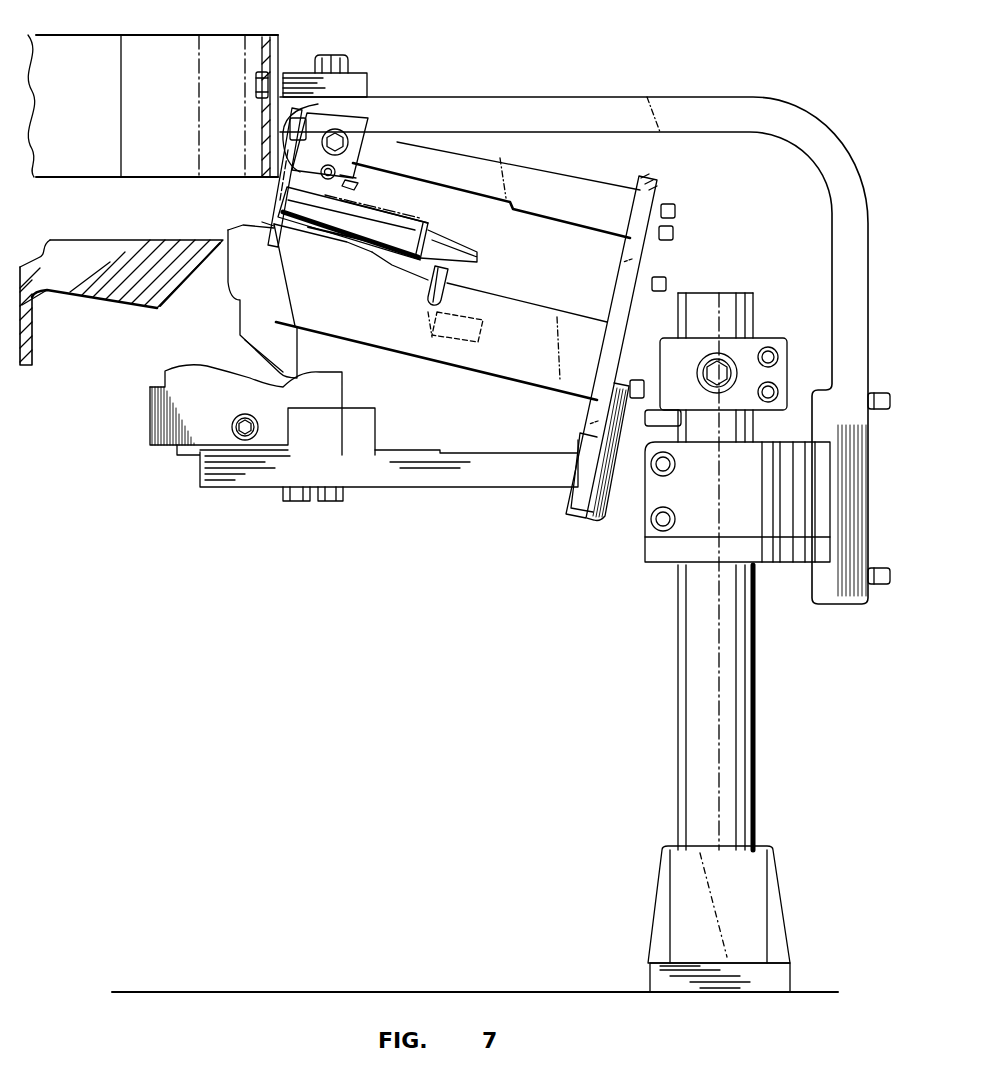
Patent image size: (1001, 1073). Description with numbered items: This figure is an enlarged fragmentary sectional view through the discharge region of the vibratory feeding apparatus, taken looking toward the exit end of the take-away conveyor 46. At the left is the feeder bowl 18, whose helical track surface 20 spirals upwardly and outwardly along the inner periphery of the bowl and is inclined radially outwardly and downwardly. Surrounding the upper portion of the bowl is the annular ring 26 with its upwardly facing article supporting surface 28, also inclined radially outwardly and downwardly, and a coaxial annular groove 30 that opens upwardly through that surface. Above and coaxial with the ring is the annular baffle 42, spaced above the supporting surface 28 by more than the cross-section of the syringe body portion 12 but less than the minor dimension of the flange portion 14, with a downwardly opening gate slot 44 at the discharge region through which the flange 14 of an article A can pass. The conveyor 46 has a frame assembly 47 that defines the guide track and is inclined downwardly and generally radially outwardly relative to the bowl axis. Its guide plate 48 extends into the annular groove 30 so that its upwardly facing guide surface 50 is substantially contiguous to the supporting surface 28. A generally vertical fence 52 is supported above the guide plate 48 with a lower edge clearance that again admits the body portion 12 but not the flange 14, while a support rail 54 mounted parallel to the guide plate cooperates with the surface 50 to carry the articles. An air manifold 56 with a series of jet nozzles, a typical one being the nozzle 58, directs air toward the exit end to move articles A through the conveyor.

The body portion 12 is at (417, 232).
The flange portion 14 is at (276, 202).
The feeder bowl 18 is at (68, 305).
The helical track surface 20 is at (142, 255).
The annular ring 26 is at (232, 320).
The article supporting surface 28 is at (263, 224).
The annular groove 30 is at (377, 245).
The annular baffle 42 is at (280, 54).
The gate slot 44 is at (264, 156).
The take-away conveyor 46 is at (511, 386).
The frame assembly 47 is at (548, 156).
The guide plate 48 is at (309, 250).
The guide surface 50 is at (346, 240).
The fence 52 is at (300, 100).
The support rail 54 is at (448, 284).
The air manifold 56 is at (352, 180).
The jet nozzle 58 is at (367, 197).
The article A is at (386, 222).